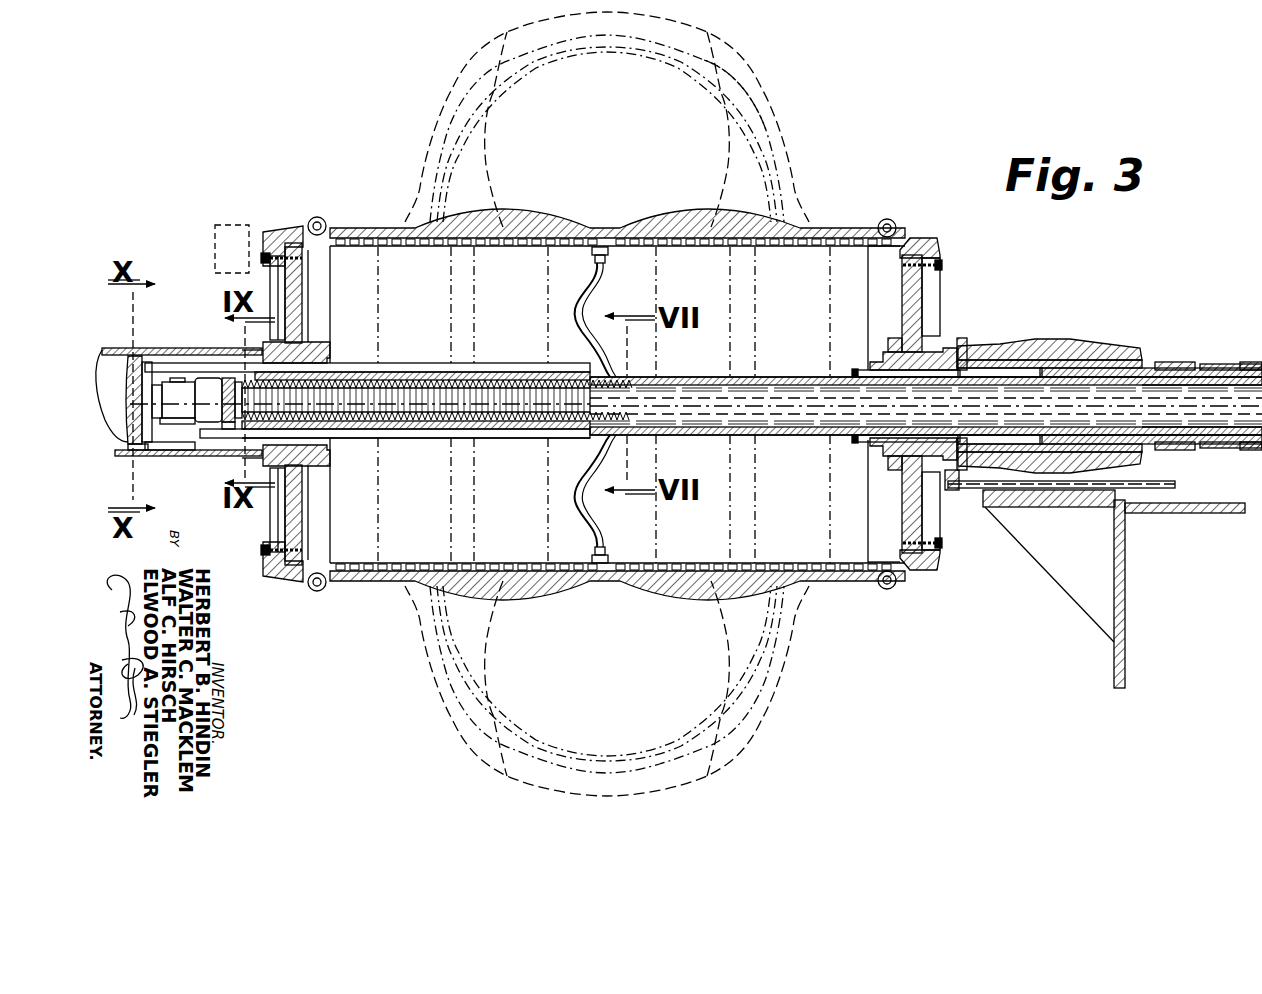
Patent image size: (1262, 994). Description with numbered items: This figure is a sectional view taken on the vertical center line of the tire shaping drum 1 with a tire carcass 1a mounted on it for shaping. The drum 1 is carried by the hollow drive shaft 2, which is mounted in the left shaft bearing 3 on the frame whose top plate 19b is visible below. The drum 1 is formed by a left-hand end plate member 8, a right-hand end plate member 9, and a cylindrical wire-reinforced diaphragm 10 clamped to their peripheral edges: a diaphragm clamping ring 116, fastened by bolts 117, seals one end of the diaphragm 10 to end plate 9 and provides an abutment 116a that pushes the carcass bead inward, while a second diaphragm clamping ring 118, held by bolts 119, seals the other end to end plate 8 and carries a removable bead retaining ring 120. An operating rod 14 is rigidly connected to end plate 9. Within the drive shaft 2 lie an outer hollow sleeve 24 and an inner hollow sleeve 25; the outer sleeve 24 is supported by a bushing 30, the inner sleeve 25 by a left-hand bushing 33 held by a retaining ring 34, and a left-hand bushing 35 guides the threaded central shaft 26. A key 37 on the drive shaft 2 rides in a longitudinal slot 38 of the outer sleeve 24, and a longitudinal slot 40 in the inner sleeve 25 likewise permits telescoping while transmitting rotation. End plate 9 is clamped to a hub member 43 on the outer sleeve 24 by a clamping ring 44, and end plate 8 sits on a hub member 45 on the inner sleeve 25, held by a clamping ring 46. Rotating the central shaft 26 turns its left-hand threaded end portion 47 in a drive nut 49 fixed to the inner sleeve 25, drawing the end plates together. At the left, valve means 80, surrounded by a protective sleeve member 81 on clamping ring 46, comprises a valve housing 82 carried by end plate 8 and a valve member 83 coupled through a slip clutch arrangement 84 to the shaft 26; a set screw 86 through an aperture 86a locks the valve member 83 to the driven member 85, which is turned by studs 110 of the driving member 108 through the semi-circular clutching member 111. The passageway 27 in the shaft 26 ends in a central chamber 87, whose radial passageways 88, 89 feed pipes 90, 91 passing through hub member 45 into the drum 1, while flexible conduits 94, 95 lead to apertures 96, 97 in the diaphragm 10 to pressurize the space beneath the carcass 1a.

The tire shaping drum 1 is at (393, 194).
The tire carcass 1a is at (738, 100).
The hollow drive shaft 2 is at (1243, 366).
The left shaft bearing 3 is at (1045, 340).
The left-hand end plate member 8 is at (304, 286).
The right-hand end plate member 9 is at (910, 287).
The diaphragm 10 is at (754, 247).
The operating rod 14 is at (1158, 486).
The top plate 19b is at (1172, 510).
The outer hollow sleeve 24 is at (1122, 368).
The inner hollow sleeve 25 is at (426, 374).
The threaded central shaft 26 is at (786, 420).
The passageway 27 is at (390, 363).
The bushing 30 is at (996, 356).
The left-hand bushing 33 is at (880, 372).
The retaining ring 34 is at (854, 372).
The left-hand bushing 35 is at (633, 378).
The key 37 is at (1172, 364).
The longitudinal slot 38 is at (1226, 364).
The longitudinal slot 40 is at (1202, 436).
The hub member 43 is at (960, 346).
The clamping ring 44 is at (890, 338).
The hub member 45 is at (318, 346).
The clamping ring 46 is at (300, 342).
The left-hand threaded end portion 47 is at (480, 390).
The drive nut 49 is at (298, 425).
The valve means 80 is at (128, 422).
The protective sleeve member 81 is at (146, 455).
The valve housing 82 is at (132, 349).
The valve member 83 is at (147, 362).
The slip clutch arrangement 84 is at (185, 472).
The driven member 85 is at (173, 420).
The set screw 86 is at (200, 380).
The aperture 86a is at (157, 385).
The central chamber 87 is at (150, 402).
The radial passageway 88 is at (100, 392).
The radial passageway 89 is at (126, 446).
The pipe 90 is at (355, 363).
The pipe 91 is at (385, 438).
The flexible conduit 94 is at (588, 308).
The flexible conduit 95 is at (588, 500).
The aperture 96 is at (603, 247).
The aperture 97 is at (605, 563).
The driving member 108 is at (228, 378).
The axially projecting stud 110 is at (237, 382).
The semi-circular clutching member 111 is at (228, 424).
The diaphragm clamping ring 116 is at (935, 246).
The abutment 116a is at (908, 240).
The bolt 117 is at (940, 263).
The second diaphragm clamping ring 118 is at (269, 243).
The bolt 119 is at (304, 260).
The removable bead retaining ring 120 is at (279, 232).